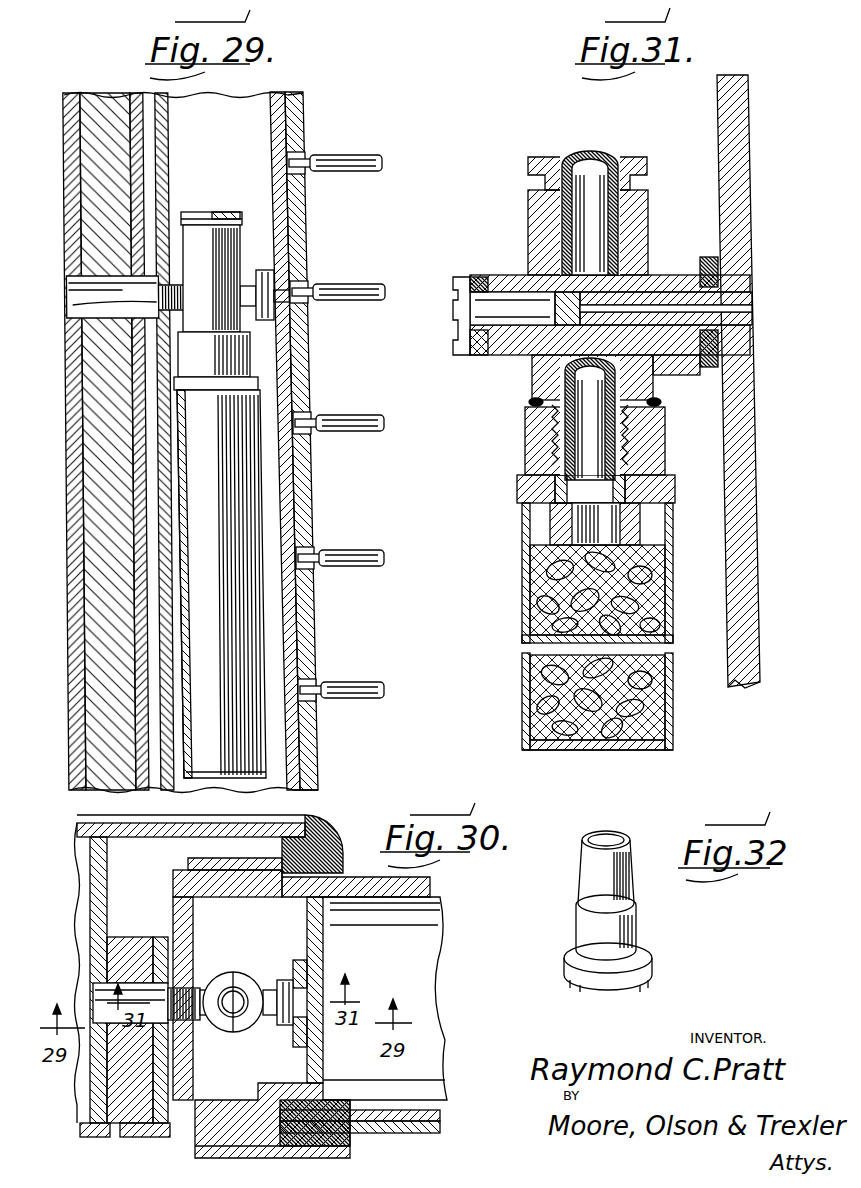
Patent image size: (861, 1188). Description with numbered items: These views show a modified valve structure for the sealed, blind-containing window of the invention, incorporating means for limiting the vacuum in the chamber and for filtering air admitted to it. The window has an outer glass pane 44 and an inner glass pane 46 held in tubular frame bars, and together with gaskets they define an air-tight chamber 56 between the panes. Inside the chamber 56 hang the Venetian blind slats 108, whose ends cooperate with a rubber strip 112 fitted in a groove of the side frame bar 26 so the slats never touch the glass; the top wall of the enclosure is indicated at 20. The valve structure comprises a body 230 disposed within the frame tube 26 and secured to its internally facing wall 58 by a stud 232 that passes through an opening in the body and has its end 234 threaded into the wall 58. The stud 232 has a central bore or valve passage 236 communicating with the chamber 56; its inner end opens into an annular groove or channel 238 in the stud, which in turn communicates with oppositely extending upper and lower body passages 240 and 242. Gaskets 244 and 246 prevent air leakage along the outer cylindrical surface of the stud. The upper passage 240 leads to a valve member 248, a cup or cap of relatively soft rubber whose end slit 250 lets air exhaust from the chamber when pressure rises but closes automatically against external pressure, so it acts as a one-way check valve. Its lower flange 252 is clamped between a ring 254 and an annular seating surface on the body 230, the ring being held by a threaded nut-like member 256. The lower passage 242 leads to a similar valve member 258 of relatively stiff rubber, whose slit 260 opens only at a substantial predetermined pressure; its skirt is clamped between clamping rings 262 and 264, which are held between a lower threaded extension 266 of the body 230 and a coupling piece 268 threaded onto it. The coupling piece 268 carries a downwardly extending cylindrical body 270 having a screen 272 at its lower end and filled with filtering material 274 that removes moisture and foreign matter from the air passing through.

In FIG. 30, the cabinet top wall 20 is at (320, 830).
In FIG. 29, the tubular frame bar 26 is at (162, 134).
In FIG. 30, the tubular frame bar 26 is at (172, 896).
In FIG. 30, the glass window pane 44 is at (432, 888).
In FIG. 30, the glass window pane 46 is at (440, 1127).
In FIG. 29, the air-tight chamber 56 is at (350, 234).
In FIG. 31, the air-tight chamber 56 is at (797, 188).
In FIG. 29, the internally facing wall 58 is at (296, 129).
In FIG. 31, the internally facing wall 58 is at (724, 130).
In FIG. 30, the internally facing wall 58 is at (305, 1070).
In FIG. 29, the slats 108 is at (345, 553).
In FIG. 30, the slats 108 is at (418, 950).
In FIG. 29, the rubber strip 112 is at (312, 636).
In FIG. 29, the body 230 is at (241, 245).
In FIG. 31, the body 230 is at (530, 205).
In FIG. 30, the body 230 is at (268, 990).
In FIG. 29, the stud 232 is at (135, 298).
In FIG. 31, the stud 232 is at (460, 290).
In FIG. 31, the end of the stud 234 is at (742, 326).
In FIG. 31, the central bore or valve passage 236 is at (745, 305).
In FIG. 31, the annular groove or channel 238 is at (588, 305).
In FIG. 31, the upper body passage 240 is at (524, 284).
In FIG. 31, the lower body passage 242 is at (565, 368).
In FIG. 31, the gasket 244 is at (702, 362).
In FIG. 31, the gasket 246 is at (478, 356).
In FIG. 31, the valve member 248 is at (604, 150).
In FIG. 30, the valve member 248 is at (228, 1028).
In FIG. 32, the valve member 248 is at (660, 945).
In FIG. 31, the slit or cut 250 is at (592, 152).
In FIG. 30, the slit or cut 250 is at (250, 1018).
In FIG. 32, the slit or cut 250 is at (600, 838).
In FIG. 32, the lower flange 252 is at (585, 978).
In FIG. 31, the ring 254 is at (648, 222).
In FIG. 29, the threaded nut-like member 256 is at (188, 211).
In FIG. 31, the threaded nut-like member 256 is at (528, 167).
In FIG. 30, the threaded nut-like member 256 is at (210, 982).
In FIG. 31, the valve member 258 is at (622, 410).
In FIG. 31, the valve slit 260 is at (532, 404).
In FIG. 31, the clamping ring 262 is at (642, 458).
In FIG. 31, the clamping ring 264 is at (602, 500).
In FIG. 31, the lower threaded extension 266 is at (546, 432).
In FIG. 29, the coupling piece 268 is at (246, 358).
In FIG. 31, the coupling piece 268 is at (520, 483).
In FIG. 29, the cylindrical body 270 is at (250, 758).
In FIG. 31, the cylindrical body 270 is at (522, 595).
In FIG. 31, the screen 272 is at (605, 745).
In FIG. 31, the filtering material 274 is at (558, 682).